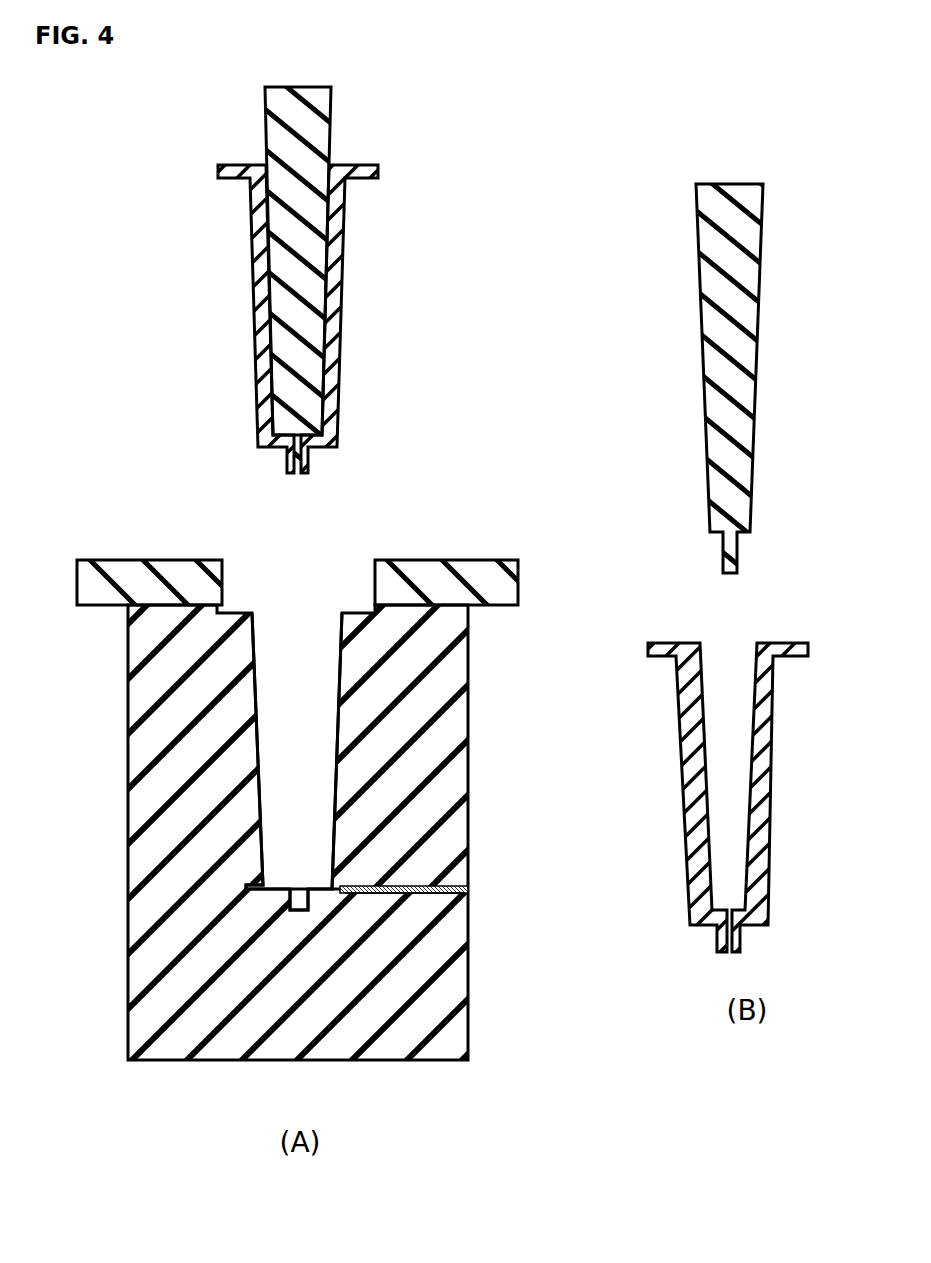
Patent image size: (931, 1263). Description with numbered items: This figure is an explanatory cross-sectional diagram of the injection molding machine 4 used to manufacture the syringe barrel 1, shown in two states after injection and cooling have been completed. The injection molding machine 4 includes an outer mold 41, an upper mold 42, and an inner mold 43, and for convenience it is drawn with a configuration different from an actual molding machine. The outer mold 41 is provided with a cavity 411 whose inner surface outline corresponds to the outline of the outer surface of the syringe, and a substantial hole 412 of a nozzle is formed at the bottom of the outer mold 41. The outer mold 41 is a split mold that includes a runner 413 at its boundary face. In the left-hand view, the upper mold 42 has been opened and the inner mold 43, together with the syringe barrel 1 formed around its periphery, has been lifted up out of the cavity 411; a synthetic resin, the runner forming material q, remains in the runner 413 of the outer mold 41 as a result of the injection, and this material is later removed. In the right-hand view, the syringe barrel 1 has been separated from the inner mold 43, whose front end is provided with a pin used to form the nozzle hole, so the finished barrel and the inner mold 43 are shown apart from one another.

The syringe barrel 1 is at (335, 238).
The injection molding machine 4 is at (489, 514).
The outer mold 41 is at (452, 722).
The cavity 411 is at (293, 823).
The hole 412 is at (295, 908).
The runner 413 is at (456, 883).
The upper mold 42 is at (175, 572).
The inner mold 43 is at (305, 277).
The runner forming material q is at (385, 895).